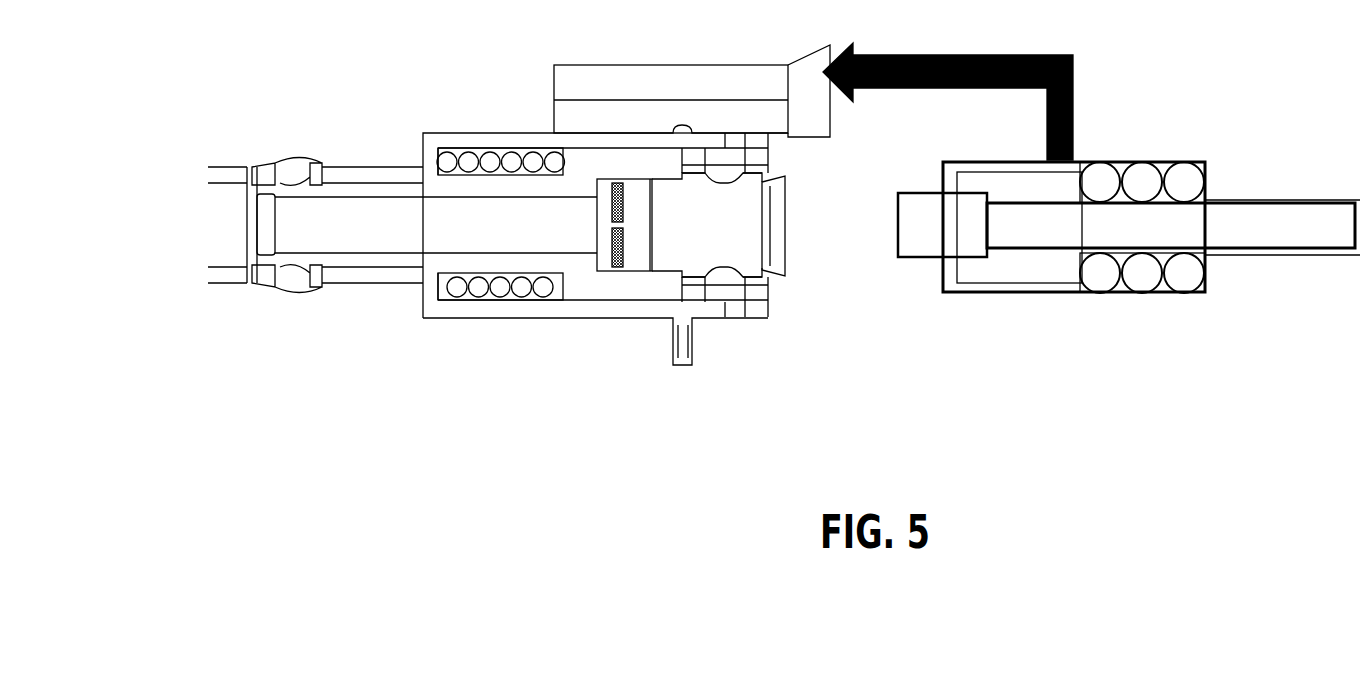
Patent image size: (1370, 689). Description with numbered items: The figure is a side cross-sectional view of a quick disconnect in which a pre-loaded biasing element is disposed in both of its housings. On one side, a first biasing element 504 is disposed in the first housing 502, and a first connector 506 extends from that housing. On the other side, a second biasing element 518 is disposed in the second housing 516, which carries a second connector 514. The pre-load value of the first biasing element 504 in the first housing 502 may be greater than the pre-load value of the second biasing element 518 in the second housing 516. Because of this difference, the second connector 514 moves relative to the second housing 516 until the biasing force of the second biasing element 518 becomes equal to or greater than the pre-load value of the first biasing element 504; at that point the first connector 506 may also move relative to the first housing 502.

The first housing 502 is at (972, 292).
The first biasing element 504 is at (1103, 278).
The first connector 506 is at (912, 257).
The second connector 514 is at (775, 246).
The second housing 516 is at (600, 312).
The second biasing element 518 is at (492, 290).